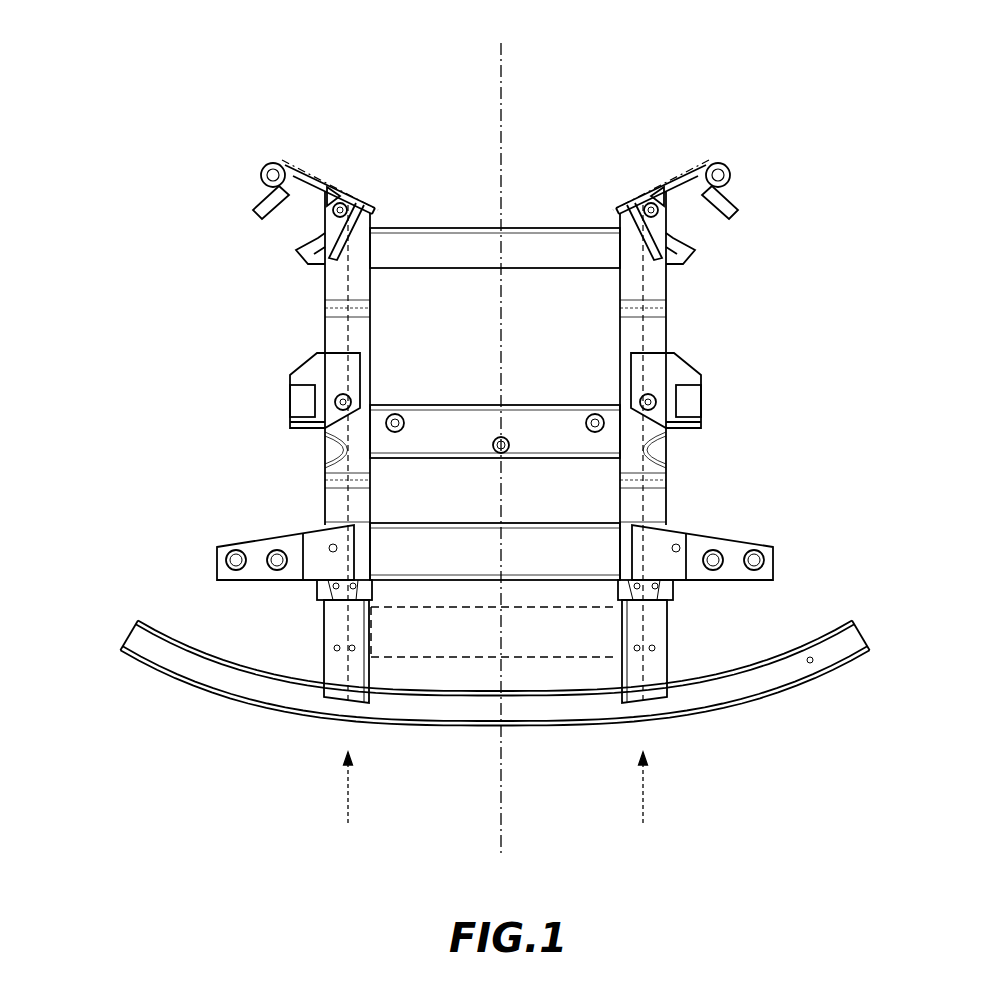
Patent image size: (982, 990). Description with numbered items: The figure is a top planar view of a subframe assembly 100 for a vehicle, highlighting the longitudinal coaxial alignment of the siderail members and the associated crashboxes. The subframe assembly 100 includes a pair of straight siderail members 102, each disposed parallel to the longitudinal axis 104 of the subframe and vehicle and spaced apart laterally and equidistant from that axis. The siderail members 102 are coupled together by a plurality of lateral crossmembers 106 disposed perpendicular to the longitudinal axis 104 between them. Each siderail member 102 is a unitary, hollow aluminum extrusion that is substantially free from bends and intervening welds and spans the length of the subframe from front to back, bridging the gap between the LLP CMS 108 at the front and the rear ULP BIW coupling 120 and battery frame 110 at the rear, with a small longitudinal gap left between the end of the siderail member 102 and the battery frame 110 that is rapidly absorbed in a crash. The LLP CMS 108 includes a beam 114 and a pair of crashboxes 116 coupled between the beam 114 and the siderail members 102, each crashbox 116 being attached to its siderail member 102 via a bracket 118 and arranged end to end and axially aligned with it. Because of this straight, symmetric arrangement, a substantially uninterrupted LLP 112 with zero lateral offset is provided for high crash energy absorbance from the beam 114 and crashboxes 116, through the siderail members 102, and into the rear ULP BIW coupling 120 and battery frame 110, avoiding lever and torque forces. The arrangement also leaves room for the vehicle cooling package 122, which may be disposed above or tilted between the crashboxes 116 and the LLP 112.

The subframe assembly 100 is at (747, 138).
The siderail member 102 is at (322, 337).
The longitudinal axis 104 is at (502, 100).
The lateral crossmember 106 is at (578, 222).
The LLP CMS 108 is at (202, 703).
The battery frame 110 is at (284, 153).
The LLP 112 is at (322, 505).
The beam 114 is at (786, 692).
The crashbox 116 is at (668, 657).
The bracket 118 is at (318, 602).
The rear ULP BIW coupling 120 is at (266, 161).
The vehicle cooling package 122 is at (583, 607).